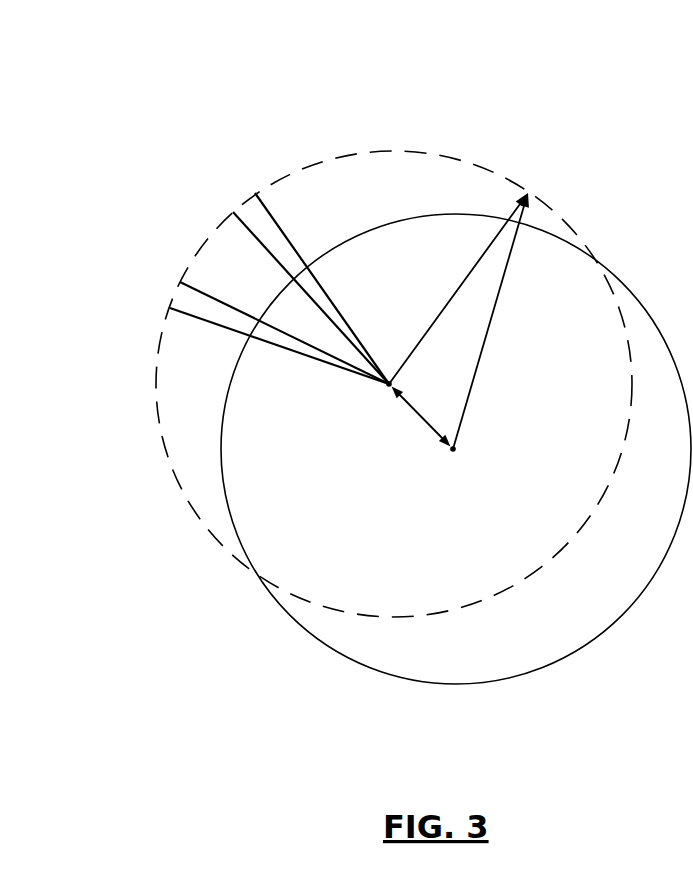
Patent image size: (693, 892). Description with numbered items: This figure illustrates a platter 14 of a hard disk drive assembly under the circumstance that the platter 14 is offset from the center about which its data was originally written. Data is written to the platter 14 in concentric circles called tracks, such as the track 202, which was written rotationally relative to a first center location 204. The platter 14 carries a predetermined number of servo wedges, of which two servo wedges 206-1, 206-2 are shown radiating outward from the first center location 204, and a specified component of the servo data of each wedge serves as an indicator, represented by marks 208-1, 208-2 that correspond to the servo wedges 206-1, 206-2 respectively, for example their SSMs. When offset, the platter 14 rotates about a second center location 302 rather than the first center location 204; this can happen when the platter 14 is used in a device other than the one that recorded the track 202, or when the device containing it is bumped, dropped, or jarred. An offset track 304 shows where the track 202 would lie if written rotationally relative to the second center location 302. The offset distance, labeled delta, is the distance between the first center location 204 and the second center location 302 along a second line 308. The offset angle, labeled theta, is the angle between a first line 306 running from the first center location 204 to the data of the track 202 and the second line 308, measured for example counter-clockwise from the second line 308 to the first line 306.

The platter 14 is at (433, 66).
The track 202 is at (480, 160).
The first center location 204 is at (389, 376).
The servo wedge 206-1 is at (268, 210).
The servo wedge 206-2 is at (188, 303).
The mark 208-1 is at (233, 211).
The mark 208-2 is at (168, 293).
The second center location 302 is at (458, 449).
The offset track 304 is at (632, 287).
The first line 306 is at (442, 309).
The second line 308 is at (408, 410).